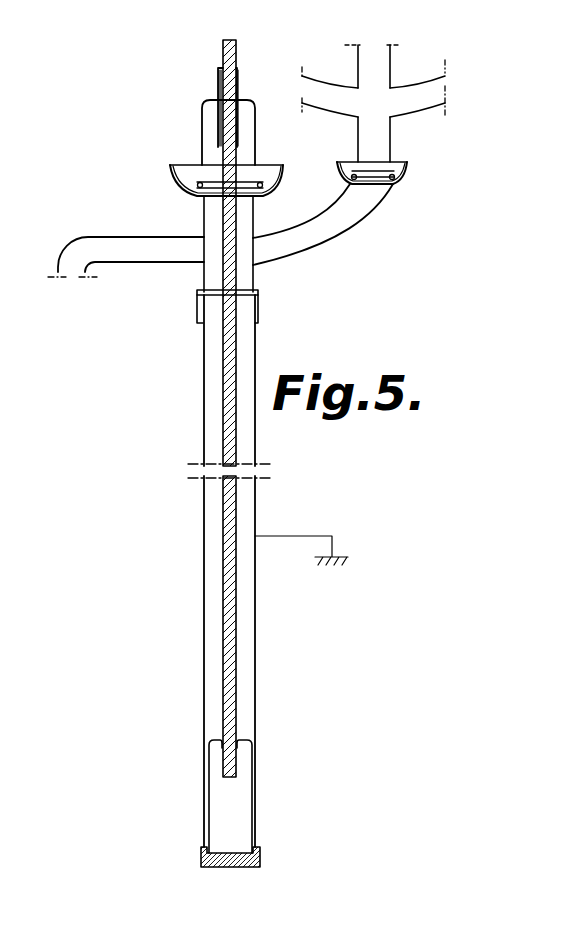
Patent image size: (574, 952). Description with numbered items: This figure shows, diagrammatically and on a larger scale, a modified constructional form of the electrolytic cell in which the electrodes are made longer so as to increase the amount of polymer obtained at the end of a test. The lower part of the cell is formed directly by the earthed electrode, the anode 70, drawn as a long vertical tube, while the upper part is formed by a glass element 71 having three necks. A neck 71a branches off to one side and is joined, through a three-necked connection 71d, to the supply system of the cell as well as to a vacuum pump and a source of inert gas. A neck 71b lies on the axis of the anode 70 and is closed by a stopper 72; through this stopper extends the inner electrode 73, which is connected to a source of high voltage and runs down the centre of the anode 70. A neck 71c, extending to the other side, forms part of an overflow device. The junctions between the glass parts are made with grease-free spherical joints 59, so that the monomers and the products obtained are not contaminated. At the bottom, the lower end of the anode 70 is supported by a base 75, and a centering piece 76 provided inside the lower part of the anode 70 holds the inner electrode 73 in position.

The spherical joint 59 is at (343, 163).
The anode 70 is at (204, 703).
The glass element 71 is at (204, 283).
The neck 71a is at (383, 202).
The neck 71b is at (255, 212).
The neck 71c is at (182, 237).
The three-necked connection 71d is at (392, 147).
The stopper 72 is at (202, 147).
The inner electrode 73 is at (236, 342).
The base 75 is at (262, 856).
The centering piece 76 is at (245, 800).